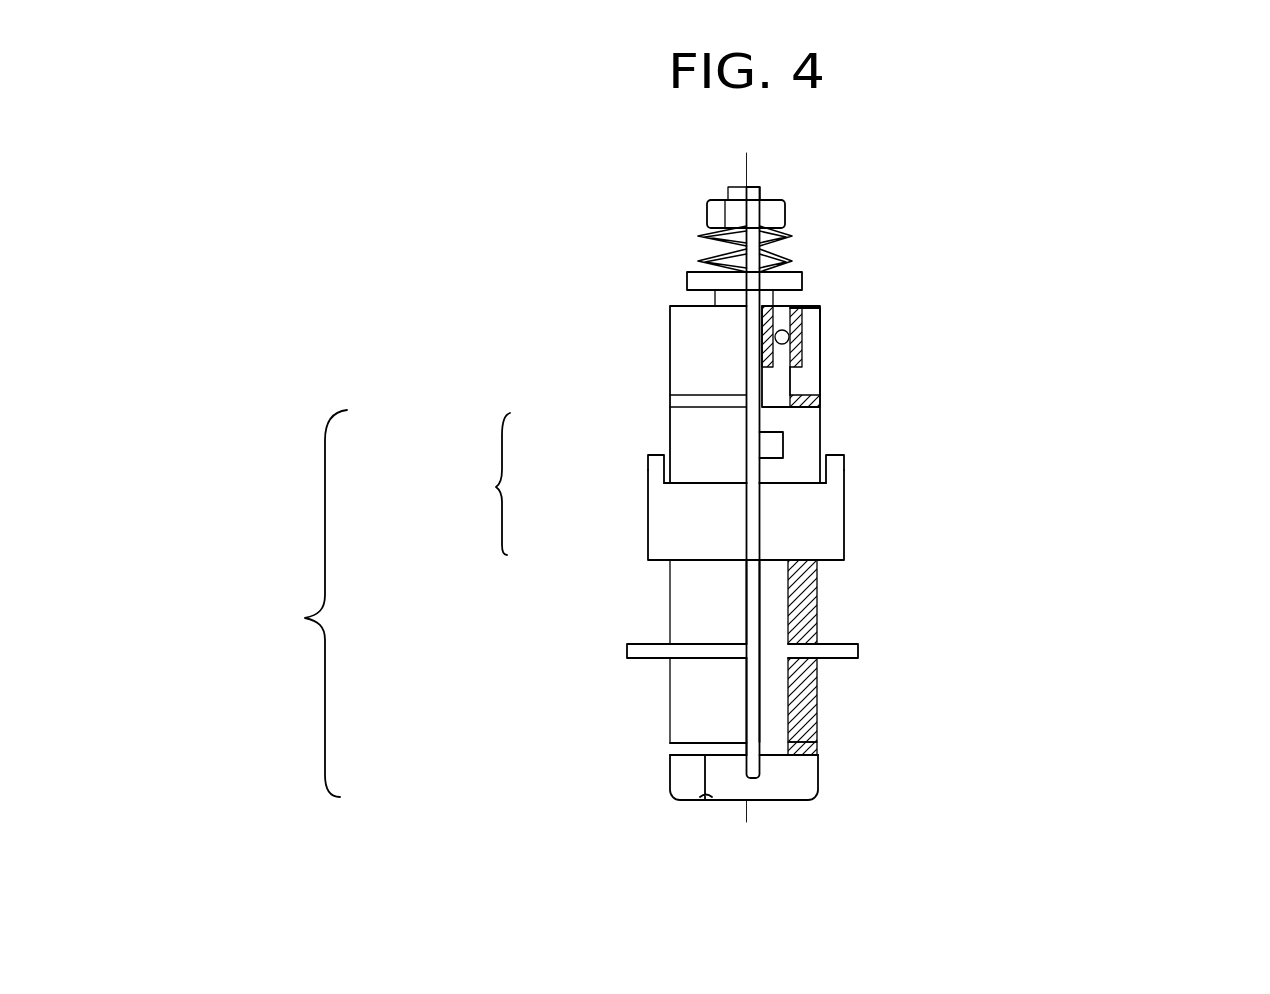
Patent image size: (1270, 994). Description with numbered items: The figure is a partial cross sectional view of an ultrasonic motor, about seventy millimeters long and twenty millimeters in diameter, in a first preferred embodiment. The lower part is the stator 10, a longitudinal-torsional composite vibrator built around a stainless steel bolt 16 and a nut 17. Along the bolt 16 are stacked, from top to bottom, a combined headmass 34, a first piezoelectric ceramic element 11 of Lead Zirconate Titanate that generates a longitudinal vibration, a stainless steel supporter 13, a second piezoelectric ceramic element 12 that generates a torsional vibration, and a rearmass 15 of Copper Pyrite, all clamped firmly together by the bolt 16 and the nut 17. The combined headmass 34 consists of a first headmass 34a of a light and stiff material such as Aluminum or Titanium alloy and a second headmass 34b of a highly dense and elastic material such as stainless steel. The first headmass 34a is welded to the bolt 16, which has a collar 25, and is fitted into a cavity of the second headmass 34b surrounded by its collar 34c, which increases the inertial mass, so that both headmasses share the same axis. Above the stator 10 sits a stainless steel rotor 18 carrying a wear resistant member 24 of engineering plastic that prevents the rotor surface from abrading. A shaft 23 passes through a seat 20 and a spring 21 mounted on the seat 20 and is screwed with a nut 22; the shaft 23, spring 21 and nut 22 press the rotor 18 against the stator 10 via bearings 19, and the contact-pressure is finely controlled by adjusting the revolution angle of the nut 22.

The stator 10 is at (272, 603).
The first piezoelectric ceramic element 11 is at (812, 592).
The second piezoelectric ceramic element 12 is at (812, 713).
The supporter 13 is at (858, 651).
The rearmass 15 is at (817, 748).
The bolt 16 is at (752, 680).
The nut 17 is at (803, 785).
The rotor 18 is at (810, 347).
The bearings 19 is at (800, 320).
The seat 20 is at (802, 284).
The spring 21 is at (795, 262).
The nut 22 is at (785, 212).
The shaft 23 is at (757, 187).
The wear resistant member 24 is at (820, 400).
The collar 25 is at (776, 447).
The combined headmass 34 is at (430, 484).
The first headmass 34a is at (804, 434).
The second headmass 34b is at (826, 525).
The collar 34c is at (655, 468).